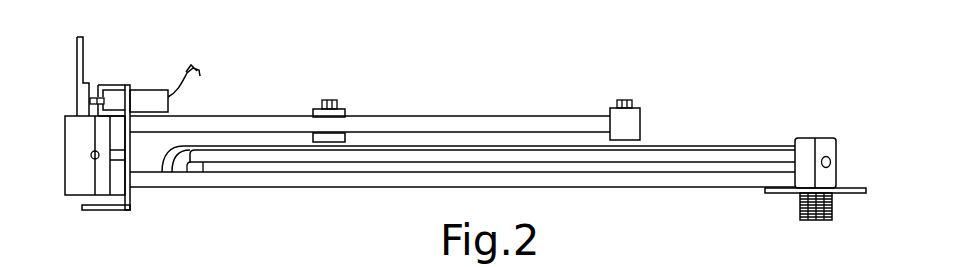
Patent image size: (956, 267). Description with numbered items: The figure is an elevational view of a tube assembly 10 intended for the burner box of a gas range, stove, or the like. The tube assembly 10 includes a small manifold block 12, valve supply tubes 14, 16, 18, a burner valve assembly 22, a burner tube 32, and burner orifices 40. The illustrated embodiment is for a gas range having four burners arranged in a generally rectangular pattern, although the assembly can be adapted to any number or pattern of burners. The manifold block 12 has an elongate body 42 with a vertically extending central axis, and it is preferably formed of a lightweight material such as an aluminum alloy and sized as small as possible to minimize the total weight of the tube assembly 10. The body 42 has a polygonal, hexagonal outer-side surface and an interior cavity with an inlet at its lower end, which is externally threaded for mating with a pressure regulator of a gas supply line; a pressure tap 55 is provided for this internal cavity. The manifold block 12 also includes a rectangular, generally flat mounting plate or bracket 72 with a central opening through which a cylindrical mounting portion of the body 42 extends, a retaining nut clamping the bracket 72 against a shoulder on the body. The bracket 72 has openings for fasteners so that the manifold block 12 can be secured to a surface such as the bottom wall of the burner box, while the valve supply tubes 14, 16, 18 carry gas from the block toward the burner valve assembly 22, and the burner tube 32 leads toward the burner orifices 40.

The tube assembly 10 is at (699, 69).
The small manifold block 12 is at (841, 134).
The valve supply tube 14 is at (607, 187).
The valve supply tube 16 is at (176, 150).
The valve supply tube 18 is at (322, 162).
The burner valve assembly 22 is at (61, 174).
The burner tube 32 is at (433, 116).
The burner orifice 40 is at (345, 115).
The elongate body 42 is at (822, 138).
The pressure tap 55 is at (831, 163).
The mounting plate or bracket 72 is at (850, 193).